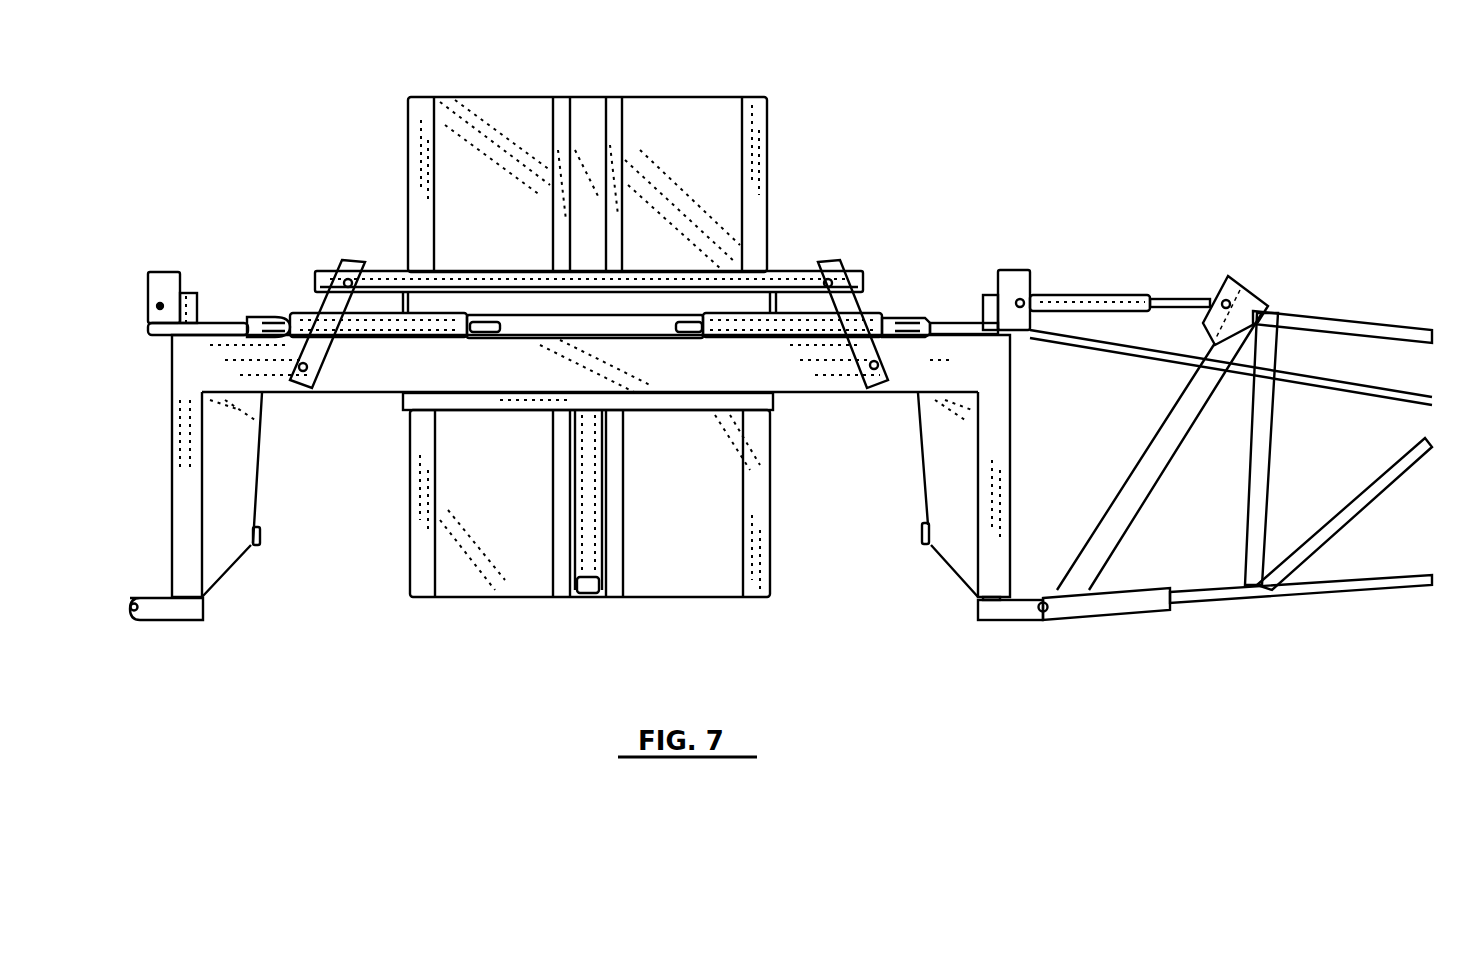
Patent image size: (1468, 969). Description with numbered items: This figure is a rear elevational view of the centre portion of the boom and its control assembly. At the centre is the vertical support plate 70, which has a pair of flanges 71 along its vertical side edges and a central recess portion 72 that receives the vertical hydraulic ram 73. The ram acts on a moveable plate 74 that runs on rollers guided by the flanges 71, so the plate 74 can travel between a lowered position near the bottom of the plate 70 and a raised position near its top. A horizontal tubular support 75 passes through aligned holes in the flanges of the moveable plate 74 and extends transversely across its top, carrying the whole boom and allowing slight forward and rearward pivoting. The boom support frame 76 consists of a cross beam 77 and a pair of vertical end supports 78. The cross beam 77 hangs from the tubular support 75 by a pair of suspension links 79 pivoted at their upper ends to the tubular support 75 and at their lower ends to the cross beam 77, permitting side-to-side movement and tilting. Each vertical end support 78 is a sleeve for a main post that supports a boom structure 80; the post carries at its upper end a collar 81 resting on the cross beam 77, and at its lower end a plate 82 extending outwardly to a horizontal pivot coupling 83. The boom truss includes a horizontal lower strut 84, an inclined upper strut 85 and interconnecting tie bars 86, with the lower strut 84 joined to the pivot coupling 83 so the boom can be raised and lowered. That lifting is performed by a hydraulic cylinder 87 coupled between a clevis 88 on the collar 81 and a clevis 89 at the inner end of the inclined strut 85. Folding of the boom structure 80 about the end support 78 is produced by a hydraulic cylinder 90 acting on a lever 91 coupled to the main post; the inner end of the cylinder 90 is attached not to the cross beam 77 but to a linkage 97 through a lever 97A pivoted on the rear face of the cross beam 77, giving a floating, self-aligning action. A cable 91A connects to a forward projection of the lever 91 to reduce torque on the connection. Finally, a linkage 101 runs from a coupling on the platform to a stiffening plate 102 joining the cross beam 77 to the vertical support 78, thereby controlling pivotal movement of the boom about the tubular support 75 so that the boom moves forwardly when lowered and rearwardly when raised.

The vertical support plate 70 is at (398, 100).
The flanges 71 is at (418, 150).
The central recess portion 72 is at (582, 112).
The vertical hydraulic ram 73 is at (585, 510).
The moveable plate 74 is at (503, 408).
The horizontal tubular support 75 is at (527, 285).
The boom support frame 76 is at (360, 400).
The cross beam 77 is at (830, 372).
The vertical end supports 78 is at (186, 485).
The suspension links 79 is at (350, 270).
The boom structure 80 is at (1228, 250).
The collar 81 is at (200, 305).
The plate 82 is at (1000, 612).
The horizontal pivot coupling 83 is at (1046, 615).
The horizontal lower strut 84 is at (1372, 592).
The inclined upper strut 85 is at (1395, 325).
The interconnecting tie bars 86 is at (1385, 478).
The hydraulic cylinder 87 is at (1103, 295).
The clevis 88 is at (165, 283).
The clevis 89 is at (1226, 300).
The hydraulic cylinder 90 is at (418, 340).
The lever 91 is at (157, 335).
The cable 91A is at (1150, 352).
The linkage 97 is at (630, 338).
The lever 97A is at (485, 340).
The linkage 101 is at (262, 537).
The stiffening plate 102 is at (240, 490).